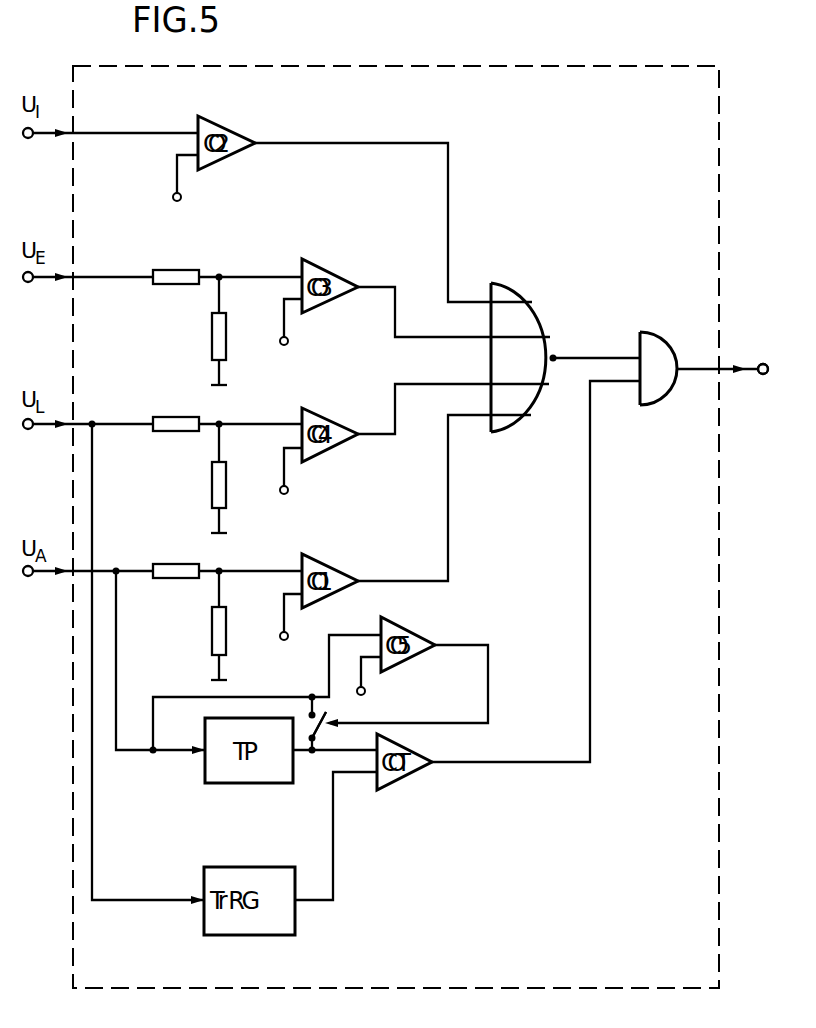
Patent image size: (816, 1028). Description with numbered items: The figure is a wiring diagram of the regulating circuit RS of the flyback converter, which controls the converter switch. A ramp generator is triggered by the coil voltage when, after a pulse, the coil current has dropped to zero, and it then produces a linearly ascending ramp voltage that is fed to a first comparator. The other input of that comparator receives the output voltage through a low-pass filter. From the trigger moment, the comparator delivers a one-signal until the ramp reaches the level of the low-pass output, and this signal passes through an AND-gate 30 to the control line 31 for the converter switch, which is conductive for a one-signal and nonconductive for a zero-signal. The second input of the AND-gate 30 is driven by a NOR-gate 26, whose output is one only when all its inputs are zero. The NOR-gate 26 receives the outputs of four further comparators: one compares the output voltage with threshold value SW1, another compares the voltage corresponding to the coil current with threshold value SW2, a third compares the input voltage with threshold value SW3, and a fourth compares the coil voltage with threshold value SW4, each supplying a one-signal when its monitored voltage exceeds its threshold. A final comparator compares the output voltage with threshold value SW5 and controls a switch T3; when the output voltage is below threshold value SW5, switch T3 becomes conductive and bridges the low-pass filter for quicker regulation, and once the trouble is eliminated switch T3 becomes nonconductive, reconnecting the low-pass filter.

The NOR-gate 26 is at (507, 297).
The AND-gate 30 is at (655, 352).
The control line 31 is at (726, 372).
The regulating circuit RS is at (594, 64).
The switch T3 is at (323, 722).
The threshold value SW1 is at (285, 633).
The threshold value SW2 is at (178, 191).
The threshold value SW3 is at (286, 338).
The threshold value SW4 is at (286, 485).
The threshold value SW5 is at (382, 687).